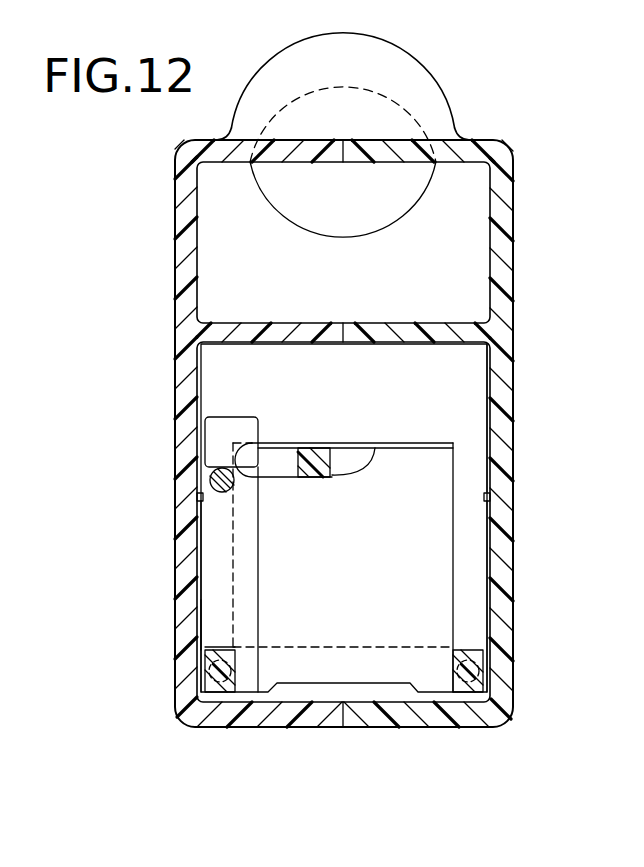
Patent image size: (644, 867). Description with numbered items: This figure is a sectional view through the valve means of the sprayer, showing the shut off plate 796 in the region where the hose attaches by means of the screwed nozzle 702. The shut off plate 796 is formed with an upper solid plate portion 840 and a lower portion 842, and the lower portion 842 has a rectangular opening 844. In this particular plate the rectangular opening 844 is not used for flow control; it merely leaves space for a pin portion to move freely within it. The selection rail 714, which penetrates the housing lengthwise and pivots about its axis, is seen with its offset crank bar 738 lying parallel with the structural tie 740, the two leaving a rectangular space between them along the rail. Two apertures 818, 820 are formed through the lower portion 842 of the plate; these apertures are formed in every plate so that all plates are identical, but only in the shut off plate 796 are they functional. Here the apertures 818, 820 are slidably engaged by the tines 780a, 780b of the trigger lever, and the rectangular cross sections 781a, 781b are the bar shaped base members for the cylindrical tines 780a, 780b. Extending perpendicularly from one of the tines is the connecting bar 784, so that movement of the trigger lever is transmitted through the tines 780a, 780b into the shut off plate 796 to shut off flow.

The screwed nozzle 702 is at (366, 50).
The shut off plate 796 is at (466, 377).
The upper solid plate portion 840 is at (448, 412).
The lower portion 842 is at (467, 472).
The rectangular opening 844 is at (450, 610).
The aperture 818 is at (480, 645).
The tine 780a is at (469, 684).
The tine 780b is at (219, 678).
The rectangular cross section 781a is at (452, 662).
The rectangular cross section 781b is at (243, 682).
The aperture 820 is at (222, 655).
The offset crank bar 738 is at (207, 482).
The connecting bar 784 is at (230, 425).
The selection rail 714 is at (282, 465).
The structural tie 740 is at (322, 448).